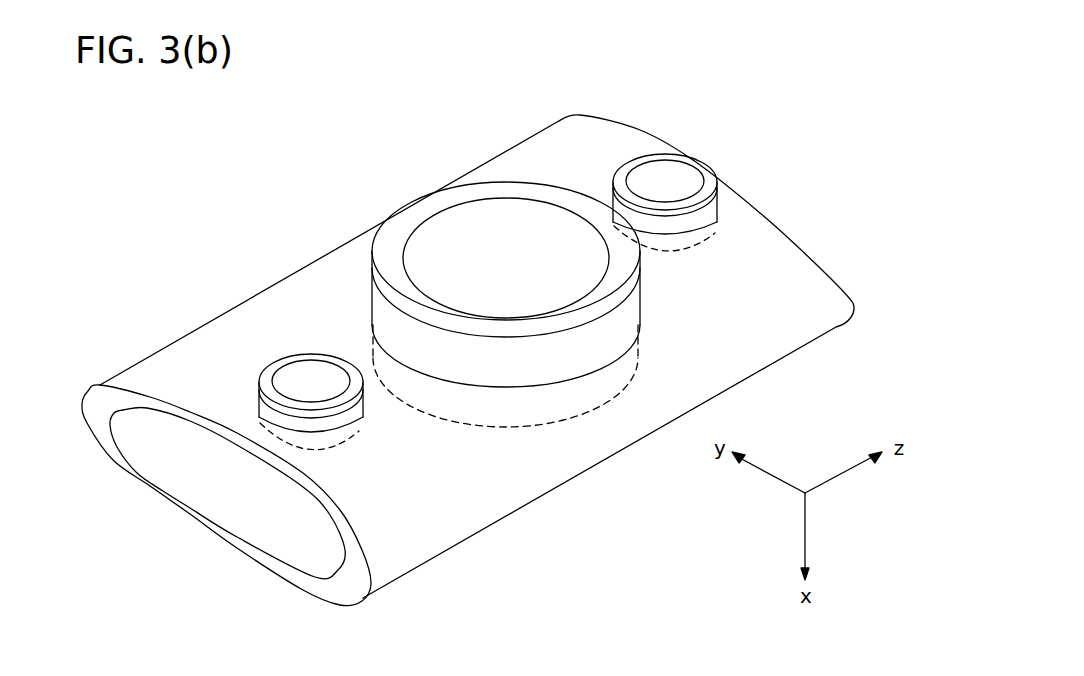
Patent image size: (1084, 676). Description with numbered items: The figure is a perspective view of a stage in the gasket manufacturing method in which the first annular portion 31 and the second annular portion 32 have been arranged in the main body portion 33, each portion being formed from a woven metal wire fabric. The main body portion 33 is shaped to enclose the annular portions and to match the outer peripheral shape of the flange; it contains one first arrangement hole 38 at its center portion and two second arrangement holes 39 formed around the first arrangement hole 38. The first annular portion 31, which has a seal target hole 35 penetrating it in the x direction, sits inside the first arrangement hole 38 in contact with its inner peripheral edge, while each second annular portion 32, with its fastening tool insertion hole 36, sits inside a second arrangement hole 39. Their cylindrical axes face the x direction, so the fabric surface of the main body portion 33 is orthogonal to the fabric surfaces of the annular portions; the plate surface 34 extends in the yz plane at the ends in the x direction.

The first annular portion 31 is at (425, 186).
The second annular portion 32 is at (277, 345).
The main body portion 33 is at (650, 140).
The plate surface 34 is at (228, 373).
The seal target hole 35 is at (492, 210).
The fastening tool insertion hole 36 is at (315, 373).
The first arrangement hole 38 is at (530, 387).
The second arrangement hole 39 is at (355, 432).